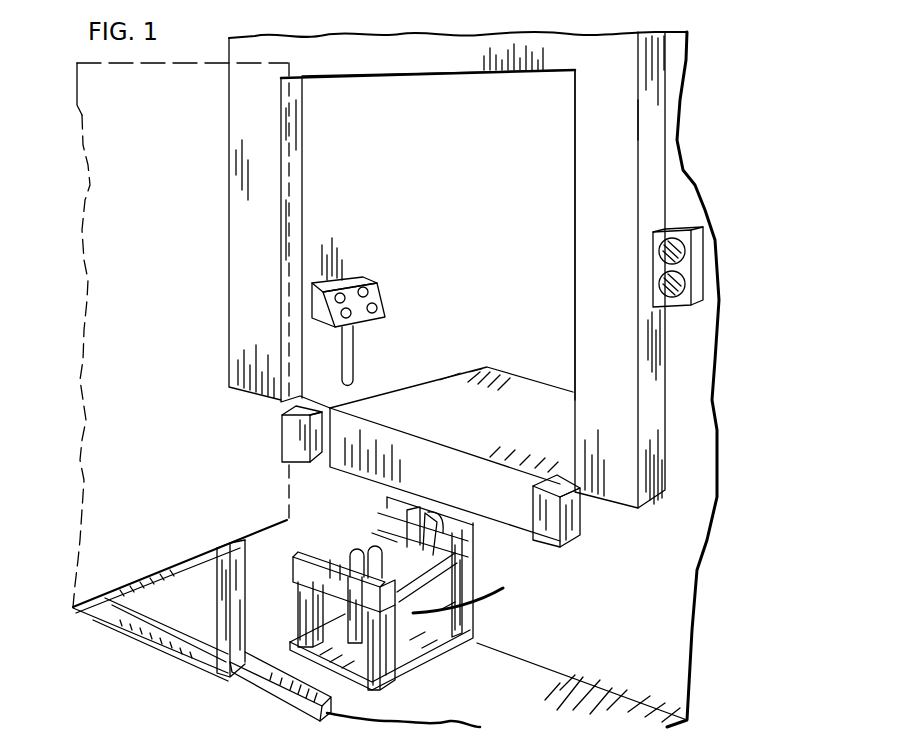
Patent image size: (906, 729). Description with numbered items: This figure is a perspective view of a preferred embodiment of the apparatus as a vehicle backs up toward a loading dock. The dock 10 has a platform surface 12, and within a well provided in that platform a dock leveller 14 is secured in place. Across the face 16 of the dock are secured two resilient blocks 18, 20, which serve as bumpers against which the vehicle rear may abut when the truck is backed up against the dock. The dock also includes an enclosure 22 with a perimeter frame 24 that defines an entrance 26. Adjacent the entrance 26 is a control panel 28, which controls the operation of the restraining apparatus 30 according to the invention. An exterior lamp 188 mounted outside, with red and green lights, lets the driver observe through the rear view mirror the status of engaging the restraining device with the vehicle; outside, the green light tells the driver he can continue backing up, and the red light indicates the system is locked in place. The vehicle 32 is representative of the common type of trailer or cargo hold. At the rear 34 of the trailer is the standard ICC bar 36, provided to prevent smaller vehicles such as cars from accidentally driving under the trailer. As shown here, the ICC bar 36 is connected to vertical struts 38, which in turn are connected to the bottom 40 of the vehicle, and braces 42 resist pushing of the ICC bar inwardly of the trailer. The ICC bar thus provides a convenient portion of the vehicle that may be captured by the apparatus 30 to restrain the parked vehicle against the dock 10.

The dock 10 is at (620, 538).
The platform surface 12 is at (404, 375).
The dock leveller 14 is at (517, 406).
The face 16 is at (557, 633).
The resilient block 18 is at (545, 535).
The resilient block 20 is at (300, 449).
The enclosure 22 is at (680, 194).
The perimeter frame 24 is at (622, 164).
The entrance 26 is at (410, 154).
The control panel 28 is at (386, 295).
The apparatus 30 is at (429, 665).
The vehicle 32 is at (140, 463).
The rear 34 is at (276, 536).
The ICC bar 36 is at (256, 690).
The vertical struts 38 is at (238, 620).
The bottom 40 is at (222, 548).
The braces 42 is at (165, 630).
The exterior lamp 188 is at (699, 274).